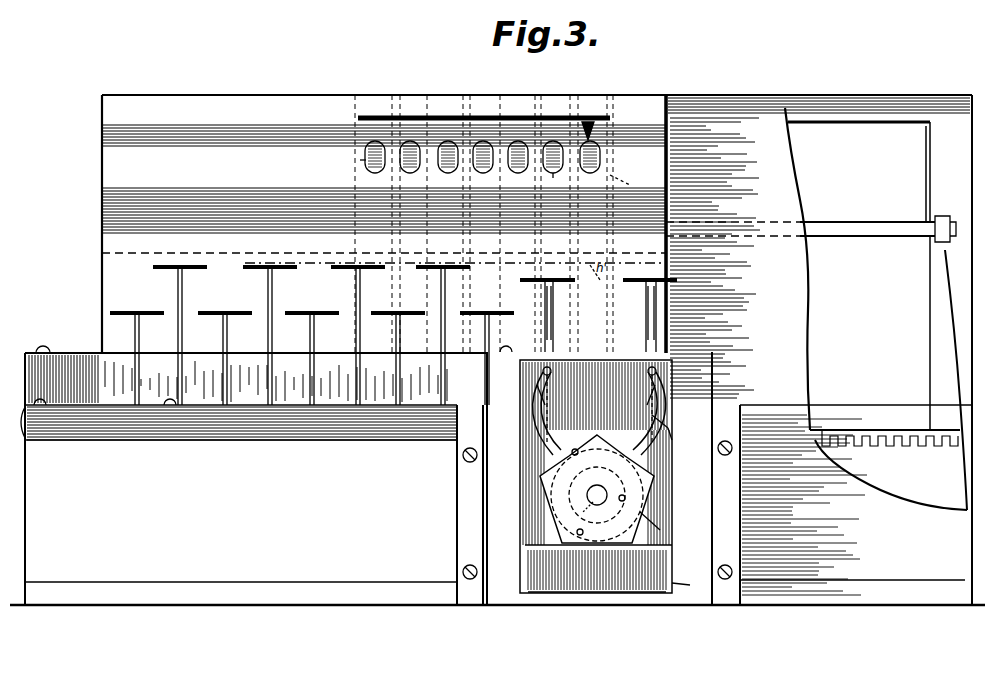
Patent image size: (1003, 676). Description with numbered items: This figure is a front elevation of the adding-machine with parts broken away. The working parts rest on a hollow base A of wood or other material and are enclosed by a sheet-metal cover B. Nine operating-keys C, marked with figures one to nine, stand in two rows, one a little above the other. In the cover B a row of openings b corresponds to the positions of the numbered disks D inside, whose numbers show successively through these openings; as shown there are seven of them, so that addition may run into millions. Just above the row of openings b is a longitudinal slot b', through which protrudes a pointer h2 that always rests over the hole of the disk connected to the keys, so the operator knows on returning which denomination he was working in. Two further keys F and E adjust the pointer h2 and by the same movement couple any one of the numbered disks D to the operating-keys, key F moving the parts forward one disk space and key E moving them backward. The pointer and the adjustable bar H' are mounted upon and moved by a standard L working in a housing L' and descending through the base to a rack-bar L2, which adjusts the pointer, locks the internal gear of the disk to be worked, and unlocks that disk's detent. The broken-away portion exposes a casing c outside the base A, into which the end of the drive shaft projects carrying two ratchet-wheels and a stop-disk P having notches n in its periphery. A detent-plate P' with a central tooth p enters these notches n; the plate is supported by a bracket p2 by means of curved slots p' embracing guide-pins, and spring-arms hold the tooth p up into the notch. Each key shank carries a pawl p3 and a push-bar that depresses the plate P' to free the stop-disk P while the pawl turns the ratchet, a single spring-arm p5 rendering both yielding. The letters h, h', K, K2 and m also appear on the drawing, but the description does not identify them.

The hollow base A is at (380, 475).
The cover B is at (497, 350).
The operating-keys C is at (504, 313).
The numbered disks D is at (366, 160).
The key E is at (648, 316).
The key F is at (548, 340).
The slots or openings b is at (492, 165).
The longitudinal slot b' is at (484, 107).
The lever h is at (550, 184).
The lever arm h' is at (629, 184).
The pointer h2 is at (588, 122).
The knob K is at (944, 201).
The bracket K2 is at (806, 150).
The adjustable bar H' is at (800, 239).
The standard L is at (856, 373).
The housing L' is at (785, 269).
The rack-bar L2 is at (924, 448).
The stop-disk P is at (596, 476).
The detent-plate P' is at (598, 568).
The central lug or tooth p is at (573, 483).
The curved slot p' is at (669, 526).
The bracket p2 is at (684, 585).
The pawl p3 is at (672, 431).
The spring-arm p5 is at (555, 538).
The casing c is at (682, 437).
The shaft m is at (582, 510).
The notches n is at (600, 493).